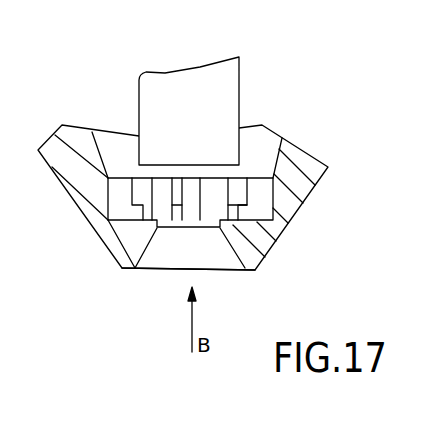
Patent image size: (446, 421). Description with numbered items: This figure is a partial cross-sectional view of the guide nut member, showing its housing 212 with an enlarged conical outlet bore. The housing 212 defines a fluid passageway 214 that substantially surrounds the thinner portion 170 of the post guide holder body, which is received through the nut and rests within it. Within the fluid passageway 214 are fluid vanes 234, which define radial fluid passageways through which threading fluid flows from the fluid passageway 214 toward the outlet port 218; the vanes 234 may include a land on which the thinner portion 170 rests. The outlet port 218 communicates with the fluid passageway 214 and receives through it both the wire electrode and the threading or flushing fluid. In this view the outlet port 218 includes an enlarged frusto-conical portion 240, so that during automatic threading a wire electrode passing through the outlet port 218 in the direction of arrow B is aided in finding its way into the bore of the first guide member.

The thinner portion 170 is at (252, 108).
The fluid passageway 214 is at (268, 143).
The housing 212 is at (298, 189).
The fluid vanes 234 is at (348, 236).
The outlet port 218 is at (188, 227).
The enlarged frusto-conical portion 240 is at (198, 255).